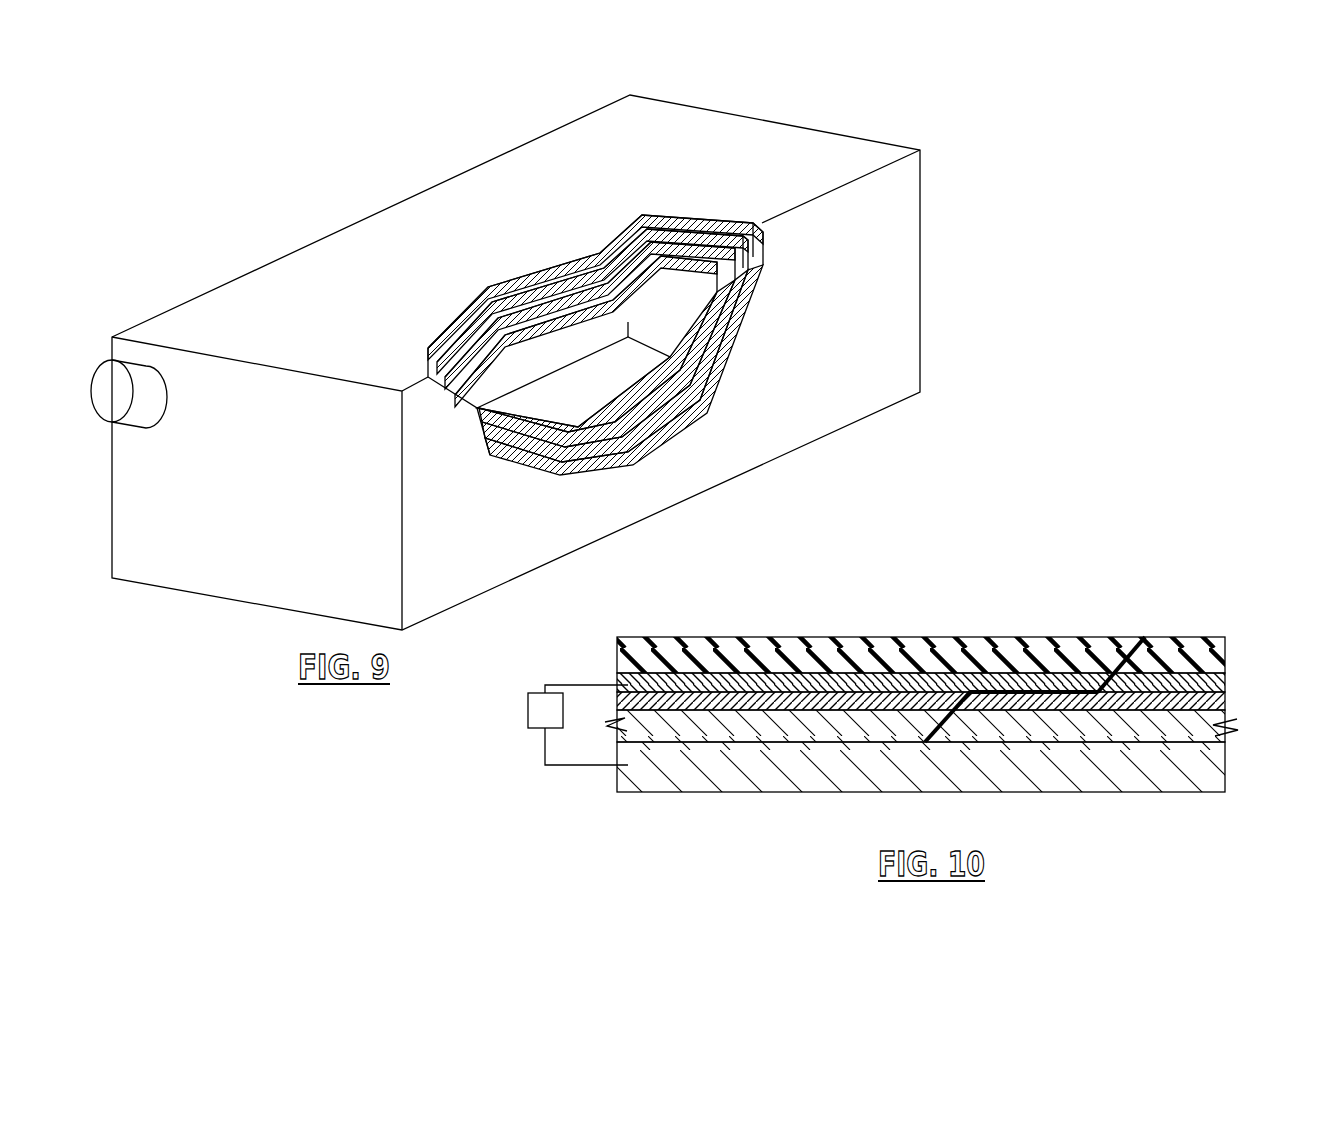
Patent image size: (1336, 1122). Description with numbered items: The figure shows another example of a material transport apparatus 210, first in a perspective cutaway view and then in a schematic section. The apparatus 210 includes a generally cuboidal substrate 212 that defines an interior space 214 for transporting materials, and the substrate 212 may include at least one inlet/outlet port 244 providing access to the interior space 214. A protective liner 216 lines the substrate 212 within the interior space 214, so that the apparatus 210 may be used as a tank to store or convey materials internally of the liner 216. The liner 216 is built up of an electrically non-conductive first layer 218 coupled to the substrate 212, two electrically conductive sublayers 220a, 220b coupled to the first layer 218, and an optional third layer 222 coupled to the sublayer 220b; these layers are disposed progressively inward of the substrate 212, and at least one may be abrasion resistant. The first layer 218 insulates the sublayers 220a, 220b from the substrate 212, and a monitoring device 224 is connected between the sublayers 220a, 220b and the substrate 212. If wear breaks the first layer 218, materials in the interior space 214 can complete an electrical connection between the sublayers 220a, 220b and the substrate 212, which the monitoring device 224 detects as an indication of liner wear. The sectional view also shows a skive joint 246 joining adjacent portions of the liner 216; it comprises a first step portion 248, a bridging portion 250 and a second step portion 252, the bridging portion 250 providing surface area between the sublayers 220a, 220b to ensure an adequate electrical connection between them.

In FIG. 9, the material transport apparatus 210 is at (293, 208).
In FIG. 9, the substrate 212 is at (540, 182).
In FIG. 10, the substrate 212 is at (1215, 770).
In FIG. 9, the interior space 214 is at (557, 358).
In FIG. 9, the protective liner 216 is at (988, 275).
In FIG. 9, the first layer 218 is at (707, 356).
In FIG. 10, the first layer 218 is at (1225, 735).
In FIG. 9, the sublayer 220a is at (705, 325).
In FIG. 10, the sublayer 220a is at (1225, 702).
In FIG. 9, the sublayer 220b is at (702, 307).
In FIG. 10, the sublayer 220b is at (1217, 683).
In FIG. 9, the third layer 222 is at (695, 285).
In FIG. 10, the third layer 222 is at (1215, 660).
In FIG. 10, the monitoring device 224 is at (528, 712).
In FIG. 9, the inlet/outlet port 244 is at (130, 375).
In FIG. 10, the skive joint 246 is at (1136, 627).
In FIG. 10, the first step portion 248 is at (932, 722).
In FIG. 10, the bridging portion 250 is at (1010, 693).
In FIG. 10, the second step portion 252 is at (1123, 657).